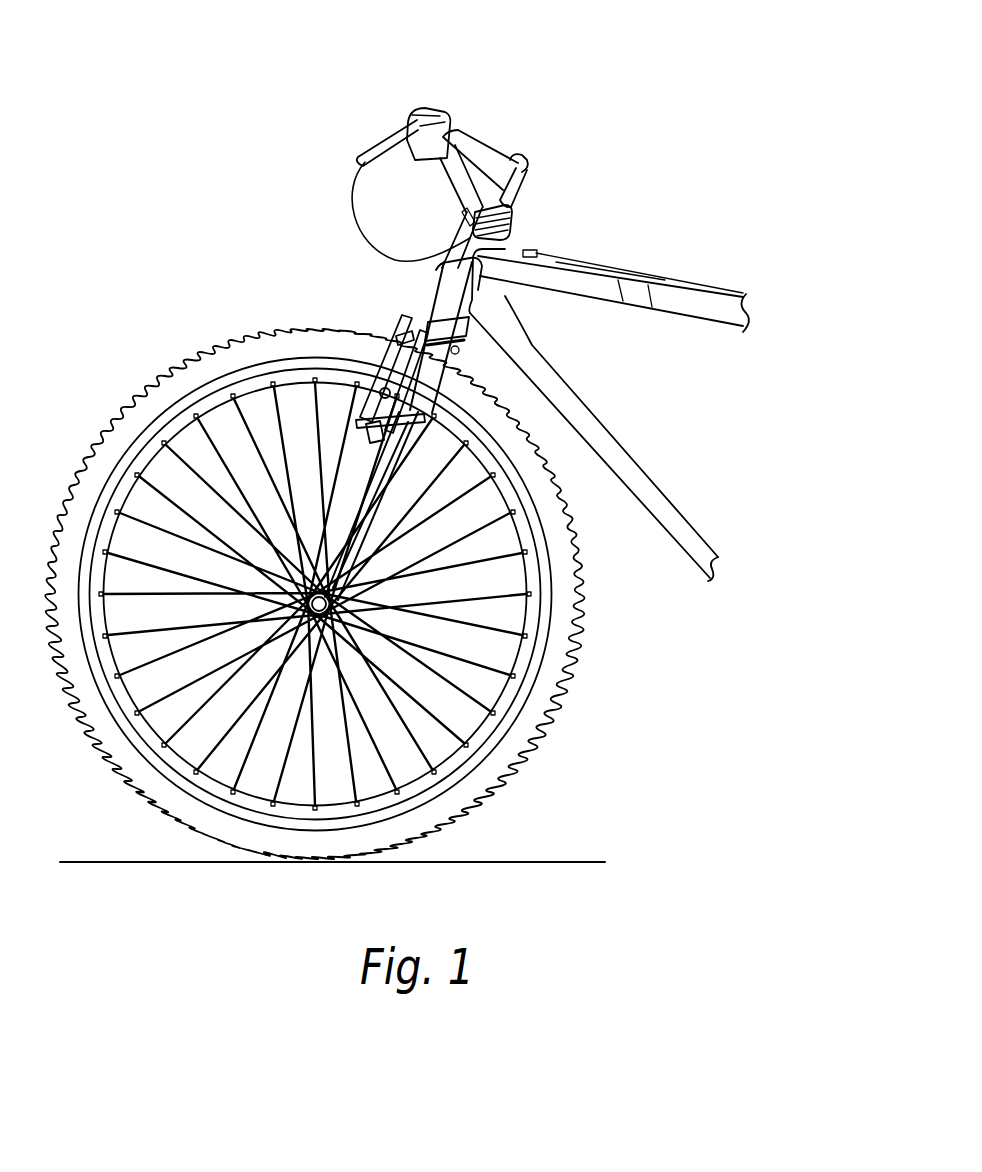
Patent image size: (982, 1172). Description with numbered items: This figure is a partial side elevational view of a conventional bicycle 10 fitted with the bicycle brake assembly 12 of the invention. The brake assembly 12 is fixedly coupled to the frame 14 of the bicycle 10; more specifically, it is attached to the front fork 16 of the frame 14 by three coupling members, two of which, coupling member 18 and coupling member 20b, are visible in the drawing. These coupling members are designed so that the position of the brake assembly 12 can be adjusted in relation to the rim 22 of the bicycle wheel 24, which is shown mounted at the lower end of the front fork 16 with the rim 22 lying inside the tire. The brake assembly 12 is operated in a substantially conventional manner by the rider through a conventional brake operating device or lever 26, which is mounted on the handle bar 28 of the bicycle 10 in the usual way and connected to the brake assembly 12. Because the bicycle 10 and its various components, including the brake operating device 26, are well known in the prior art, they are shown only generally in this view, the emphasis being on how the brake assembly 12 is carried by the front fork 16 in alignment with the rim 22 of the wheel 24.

The bicycle 10 is at (335, 125).
The bicycle brake assembly 12 is at (362, 327).
The frame 14 is at (700, 528).
The front fork 16 is at (420, 436).
The coupling member 18 is at (462, 351).
The coupling member 20b is at (425, 417).
The rim 22 is at (245, 385).
The bicycle wheel 24 is at (143, 383).
The brake operating device 26 is at (402, 132).
The handle bar 28 is at (474, 143).